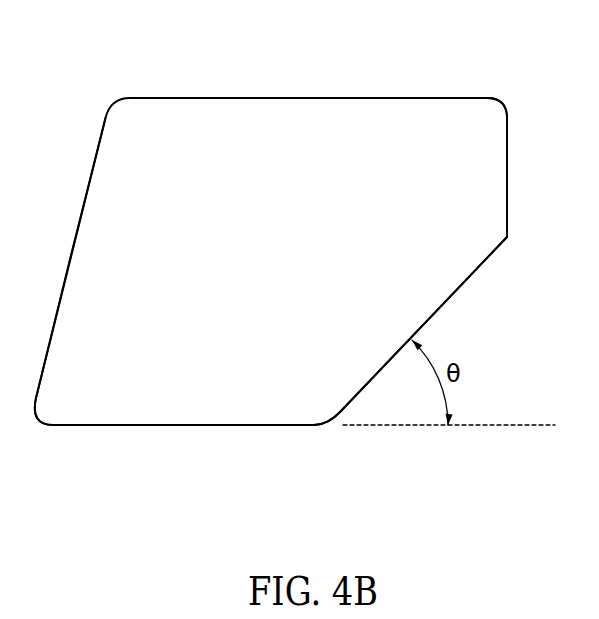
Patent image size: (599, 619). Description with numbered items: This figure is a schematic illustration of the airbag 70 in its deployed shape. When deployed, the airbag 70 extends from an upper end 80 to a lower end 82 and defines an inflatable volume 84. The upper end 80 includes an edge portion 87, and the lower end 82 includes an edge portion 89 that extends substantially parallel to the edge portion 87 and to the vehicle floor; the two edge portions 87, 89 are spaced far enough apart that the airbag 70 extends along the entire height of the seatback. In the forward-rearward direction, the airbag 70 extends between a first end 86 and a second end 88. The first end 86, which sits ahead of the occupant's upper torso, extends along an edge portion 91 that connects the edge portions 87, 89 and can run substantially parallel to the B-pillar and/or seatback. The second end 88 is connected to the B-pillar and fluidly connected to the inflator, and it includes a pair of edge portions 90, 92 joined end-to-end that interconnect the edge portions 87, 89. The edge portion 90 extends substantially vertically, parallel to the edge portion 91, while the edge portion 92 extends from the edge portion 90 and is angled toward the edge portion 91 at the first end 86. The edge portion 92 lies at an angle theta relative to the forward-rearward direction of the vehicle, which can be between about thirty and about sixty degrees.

The airbag 70 is at (520, 52).
The upper end 80 is at (97, 82).
The lower end 82 is at (291, 446).
The inflatable volume 84 is at (351, 157).
The first end 86 is at (92, 262).
The edge portion 87 is at (248, 98).
The second end 88 is at (488, 172).
The edge portion 89 is at (142, 427).
The edge portion 90 is at (478, 268).
The edge portion 91 is at (85, 202).
The edge portion 92 is at (508, 129).